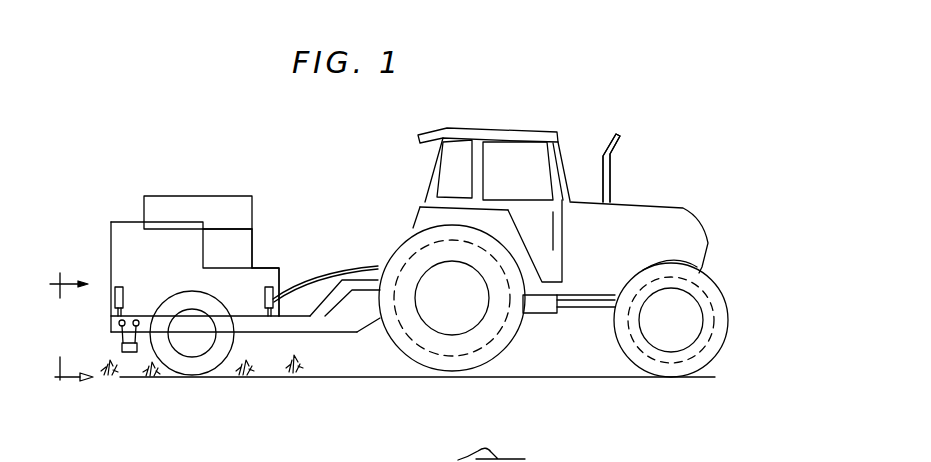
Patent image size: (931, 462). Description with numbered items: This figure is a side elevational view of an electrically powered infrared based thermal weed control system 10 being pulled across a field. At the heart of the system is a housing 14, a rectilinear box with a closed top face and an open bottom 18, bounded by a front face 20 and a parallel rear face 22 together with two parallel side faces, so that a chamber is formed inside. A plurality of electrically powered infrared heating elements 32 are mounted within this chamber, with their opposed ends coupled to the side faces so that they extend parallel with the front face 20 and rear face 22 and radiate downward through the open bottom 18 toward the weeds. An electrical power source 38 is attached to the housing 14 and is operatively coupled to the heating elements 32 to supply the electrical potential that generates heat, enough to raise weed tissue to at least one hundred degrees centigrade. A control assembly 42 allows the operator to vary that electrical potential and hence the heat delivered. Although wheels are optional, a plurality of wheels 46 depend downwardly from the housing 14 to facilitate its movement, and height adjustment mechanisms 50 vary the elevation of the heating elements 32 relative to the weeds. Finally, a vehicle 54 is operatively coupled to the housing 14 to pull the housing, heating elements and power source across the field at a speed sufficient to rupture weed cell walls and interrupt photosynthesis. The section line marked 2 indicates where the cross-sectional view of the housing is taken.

The electrically powered infrared based thermal weed control system 10 is at (541, 101).
The housing 14 is at (128, 242).
The open bottom 18 is at (258, 320).
The front face 20 is at (284, 266).
The rear face 22 is at (111, 293).
The electrically powered infrared heating elements 32 is at (125, 352).
The electrical power source 38 is at (216, 258).
The control assembly 42 is at (194, 196).
The wheels 46 is at (200, 377).
The height adjustment mechanisms 50 is at (117, 285).
The vehicle 54 is at (632, 203).
The section line for FIG. 2 is at (66, 331).